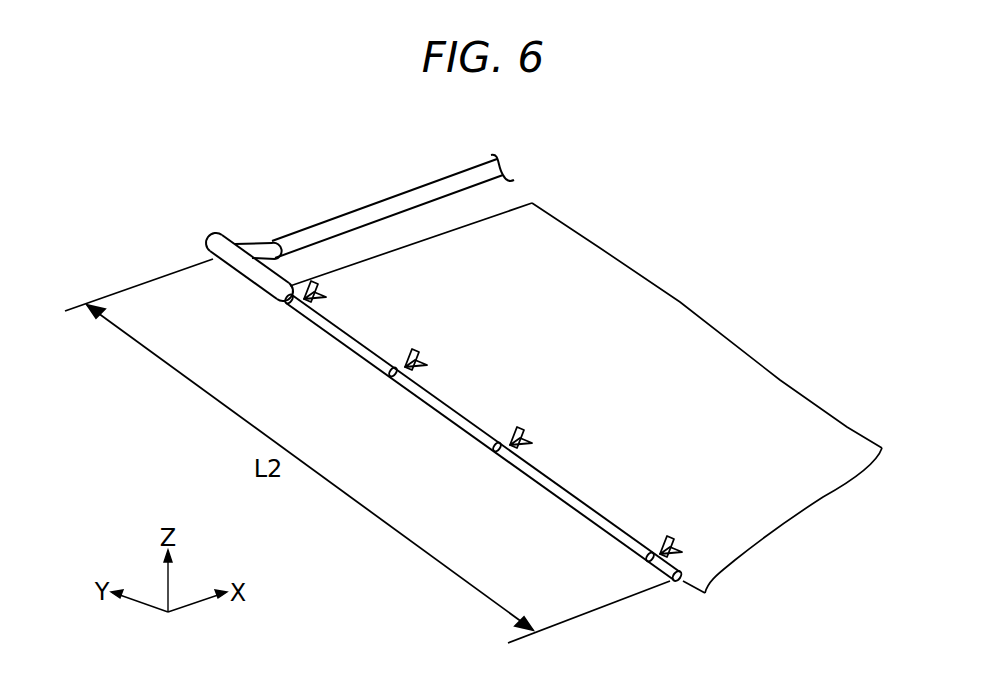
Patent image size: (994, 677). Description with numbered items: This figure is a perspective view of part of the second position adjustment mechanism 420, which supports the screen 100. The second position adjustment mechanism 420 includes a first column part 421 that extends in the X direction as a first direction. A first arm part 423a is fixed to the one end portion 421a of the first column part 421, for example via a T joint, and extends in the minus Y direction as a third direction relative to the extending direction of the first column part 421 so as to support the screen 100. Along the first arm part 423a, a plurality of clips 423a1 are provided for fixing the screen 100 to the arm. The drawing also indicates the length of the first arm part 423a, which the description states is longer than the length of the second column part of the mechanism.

The sheet 100 is at (687, 333).
The guide unit 420 is at (716, 160).
The guide bar 421 is at (407, 197).
The end portion of guide bar 421a is at (253, 246).
The shaft 423a is at (453, 428).
The protrusion 423a1 is at (417, 350).